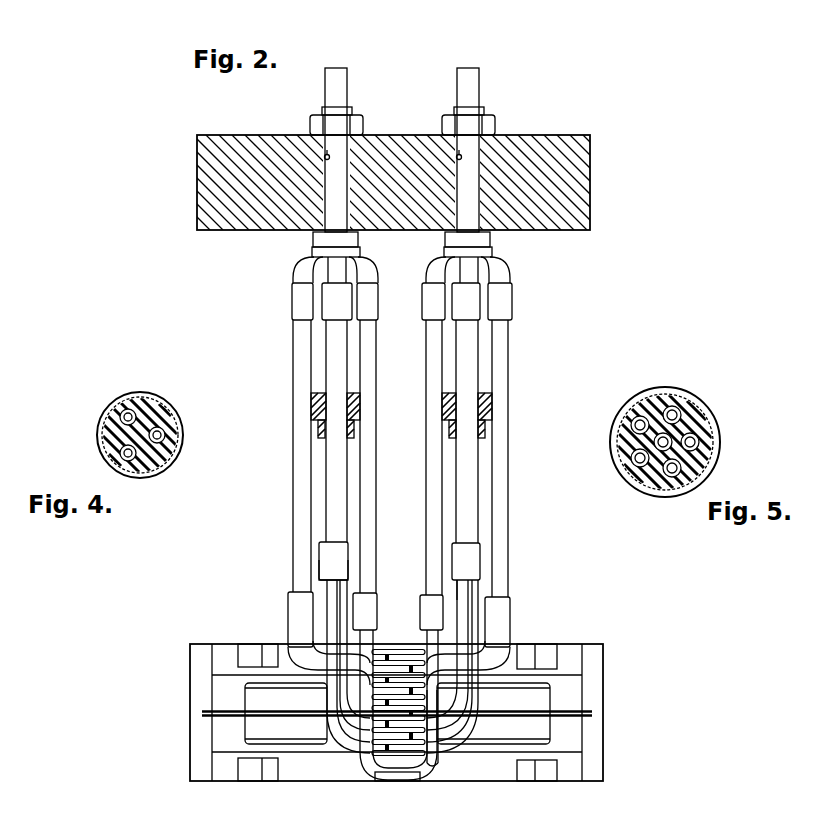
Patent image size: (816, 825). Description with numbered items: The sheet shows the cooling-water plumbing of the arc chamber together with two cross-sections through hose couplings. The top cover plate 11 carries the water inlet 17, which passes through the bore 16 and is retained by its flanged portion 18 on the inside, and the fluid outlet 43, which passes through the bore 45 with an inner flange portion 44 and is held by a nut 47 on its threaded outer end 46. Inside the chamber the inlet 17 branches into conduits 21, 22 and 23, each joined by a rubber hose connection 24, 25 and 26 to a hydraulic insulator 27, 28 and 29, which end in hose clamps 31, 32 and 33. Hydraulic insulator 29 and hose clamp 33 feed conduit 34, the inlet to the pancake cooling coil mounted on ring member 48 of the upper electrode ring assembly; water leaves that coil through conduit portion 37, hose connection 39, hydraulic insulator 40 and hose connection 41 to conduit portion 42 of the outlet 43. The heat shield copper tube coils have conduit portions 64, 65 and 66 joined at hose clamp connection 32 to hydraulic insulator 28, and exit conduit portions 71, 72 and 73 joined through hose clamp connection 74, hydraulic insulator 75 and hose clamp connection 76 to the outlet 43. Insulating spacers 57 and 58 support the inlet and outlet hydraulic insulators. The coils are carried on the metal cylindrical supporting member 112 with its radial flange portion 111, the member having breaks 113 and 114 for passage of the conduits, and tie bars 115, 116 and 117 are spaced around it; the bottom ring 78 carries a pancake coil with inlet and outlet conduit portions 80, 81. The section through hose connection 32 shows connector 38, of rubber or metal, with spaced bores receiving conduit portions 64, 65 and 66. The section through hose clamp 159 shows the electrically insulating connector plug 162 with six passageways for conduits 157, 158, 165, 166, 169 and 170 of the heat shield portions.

In FIG. 2, the top cover plate 11 is at (590, 181).
In FIG. 2, the aperture or bore 16 is at (457, 153).
In FIG. 2, the water inlet 17 is at (472, 85).
In FIG. 2, the flanged portion 18 is at (452, 238).
In FIG. 2, the conduit 21 is at (435, 265).
In FIG. 2, the conduit 22 is at (468, 272).
In FIG. 2, the conduit 23 is at (502, 275).
In FIG. 2, the rubber hose connection 24 is at (433, 300).
In FIG. 2, the rubber hose connection 25 is at (477, 317).
In FIG. 2, the rubber hose connection 26 is at (508, 300).
In FIG. 2, the hydraulic insulator 27 is at (435, 358).
In FIG. 2, the hydraulic insulator 28 is at (470, 452).
In FIG. 2, the hydraulic insulator 29 is at (500, 363).
In FIG. 2, the hose clamp 31 is at (427, 608).
In FIG. 2, the hose clamp connection 32 is at (473, 555).
In FIG. 4, the hose clamp connection 32 is at (103, 415).
In FIG. 2, the hose clamp 33 is at (507, 607).
In FIG. 2, the conduit 34 is at (482, 660).
In FIG. 2, the conduit portion 37 is at (317, 665).
In FIG. 4, the connector 38 is at (155, 403).
In FIG. 2, the rubber hose and clamp connection 39 is at (300, 600).
In FIG. 2, the hydraulic insulator 40 is at (302, 440).
In FIG. 2, the rubber hose connection 41 is at (302, 302).
In FIG. 2, the conduit portion 42 is at (303, 268).
In FIG. 2, the fluid outlet 43 is at (325, 80).
In FIG. 2, the inner flange portion 44 is at (322, 237).
In FIG. 2, the bore 45 is at (323, 150).
In FIG. 2, the threaded outer end 46 is at (347, 112).
In FIG. 2, the nut 47 is at (363, 122).
In FIG. 2, the ring member 48 is at (572, 657).
In FIG. 2, the spacer 57 is at (442, 403).
In FIG. 2, the spacer 58 is at (358, 403).
In FIG. 2, the conduit portion 64 is at (457, 590).
In FIG. 4, the conduit portion 64 is at (117, 464).
In FIG. 2, the conduit portion 65 is at (477, 690).
In FIG. 4, the conduit portion 65 is at (127, 395).
In FIG. 2, the conduit portion 66 is at (460, 727).
In FIG. 4, the conduit portion 66 is at (180, 437).
In FIG. 2, the exit conduit portion 71 is at (348, 594).
In FIG. 2, the exit conduit portion 72 is at (333, 561).
In FIG. 2, the exit conduit portion 73 is at (332, 595).
In FIG. 2, the hose clamp connection 74 is at (338, 553).
In FIG. 2, the hydraulic insulator 75 is at (338, 475).
In FIG. 2, the hose clamp connection 76 is at (345, 313).
In FIG. 2, the shaped ring 78 is at (572, 773).
In FIG. 2, the inlet conduit portion 80 is at (438, 763).
In FIG. 2, the outlet conduit portion 81 is at (410, 782).
In FIG. 2, the flange portion 111 is at (512, 731).
In FIG. 2, the cylindrical supporting member 112 is at (547, 702).
In FIG. 2, the break 113 is at (412, 647).
In FIG. 2, the break 114 is at (388, 649).
In FIG. 2, the tie bar 115 is at (590, 669).
In FIG. 2, the tie bar 116 is at (200, 685).
In FIG. 2, the tie bar 117 is at (255, 773).
In FIG. 5, the conduit portion 157 is at (620, 442).
In FIG. 5, the conduit portion 158 is at (622, 477).
In FIG. 5, the rubber hose clamp 159 is at (717, 423).
In FIG. 5, the connector plug 162 is at (703, 405).
In FIG. 5, the conduit 165 is at (648, 390).
In FIG. 5, the conduit 166 is at (672, 492).
In FIG. 5, the conduit 169 is at (690, 397).
In FIG. 5, the conduit 170 is at (717, 455).